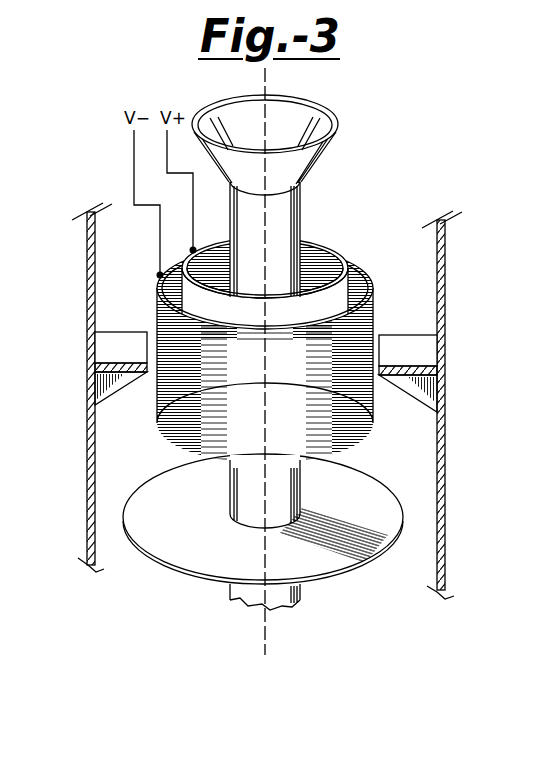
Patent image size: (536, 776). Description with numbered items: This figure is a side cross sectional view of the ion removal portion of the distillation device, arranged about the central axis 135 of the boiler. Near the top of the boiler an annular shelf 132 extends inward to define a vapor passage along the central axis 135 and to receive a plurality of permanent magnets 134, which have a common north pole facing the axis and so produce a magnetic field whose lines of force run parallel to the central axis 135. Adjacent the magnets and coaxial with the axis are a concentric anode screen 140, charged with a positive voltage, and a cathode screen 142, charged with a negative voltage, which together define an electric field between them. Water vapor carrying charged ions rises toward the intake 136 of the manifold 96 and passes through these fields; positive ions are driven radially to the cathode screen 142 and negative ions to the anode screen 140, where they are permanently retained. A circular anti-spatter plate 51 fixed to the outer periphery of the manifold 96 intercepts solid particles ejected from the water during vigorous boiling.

The central axis 135 is at (266, 81).
The intake 136 is at (331, 112).
The manifold 96 is at (302, 215).
The anode screen 140 is at (330, 249).
The cathode screen 142 is at (366, 274).
The permanent magnets 134 is at (105, 330).
The annular shelf 132 is at (103, 400).
The anti-spatter plate 51 is at (357, 568).